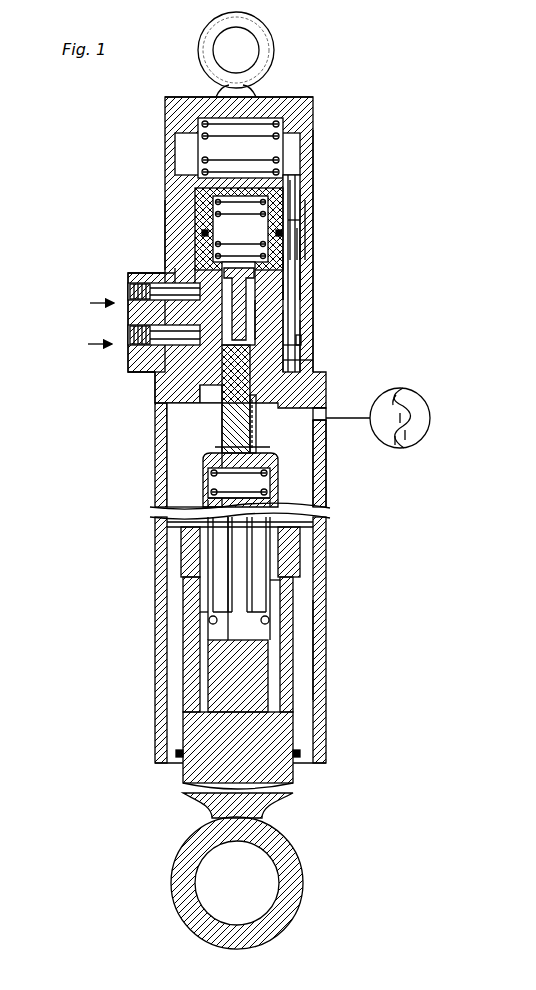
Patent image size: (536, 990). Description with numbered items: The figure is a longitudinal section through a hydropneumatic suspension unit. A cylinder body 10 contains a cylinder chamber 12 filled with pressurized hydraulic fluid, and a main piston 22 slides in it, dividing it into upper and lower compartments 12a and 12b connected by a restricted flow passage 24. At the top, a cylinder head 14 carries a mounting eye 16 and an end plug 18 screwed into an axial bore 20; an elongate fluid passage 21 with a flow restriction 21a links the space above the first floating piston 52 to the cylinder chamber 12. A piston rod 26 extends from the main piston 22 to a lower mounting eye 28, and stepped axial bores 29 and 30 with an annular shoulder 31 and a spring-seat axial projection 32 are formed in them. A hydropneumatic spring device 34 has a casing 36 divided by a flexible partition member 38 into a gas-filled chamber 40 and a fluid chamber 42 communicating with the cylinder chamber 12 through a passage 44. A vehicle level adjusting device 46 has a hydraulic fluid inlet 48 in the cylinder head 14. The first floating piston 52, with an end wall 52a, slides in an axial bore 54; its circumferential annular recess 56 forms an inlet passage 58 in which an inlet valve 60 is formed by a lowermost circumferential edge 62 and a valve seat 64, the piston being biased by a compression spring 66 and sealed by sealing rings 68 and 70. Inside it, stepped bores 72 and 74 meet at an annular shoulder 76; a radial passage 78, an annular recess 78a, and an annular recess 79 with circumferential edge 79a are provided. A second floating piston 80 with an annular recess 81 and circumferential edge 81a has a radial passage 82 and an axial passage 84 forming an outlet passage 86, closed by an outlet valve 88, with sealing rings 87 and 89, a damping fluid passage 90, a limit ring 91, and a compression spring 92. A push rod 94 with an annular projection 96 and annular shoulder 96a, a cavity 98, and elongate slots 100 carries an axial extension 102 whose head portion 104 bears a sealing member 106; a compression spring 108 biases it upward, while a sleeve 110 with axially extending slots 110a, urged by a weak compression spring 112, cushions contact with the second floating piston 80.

The cylinder body 10 is at (153, 447).
The cylinder chamber 12 is at (314, 472).
The upper compartment 12a is at (327, 452).
The lower compartment 12b is at (315, 627).
The cylinder head 14 is at (163, 193).
The mounting eye 16 is at (262, 46).
The end plug 18 is at (268, 99).
The axial bore 20 is at (316, 150).
The elongate fluid passage 21 is at (300, 190).
The flow restriction 21a is at (298, 182).
The main piston 22 is at (160, 554).
The restricted flow passage 24 is at (322, 547).
The piston rod 26 is at (190, 662).
The mounting eye 28 is at (298, 864).
The axial bore 29 is at (325, 531).
The axial bore 30 is at (310, 662).
The annular shoulder 31 is at (300, 579).
The axial projection 32 is at (165, 628).
The hydropneumatic spring device 34 is at (430, 407).
The casing 36 is at (425, 432).
The flexible partition member 38 is at (415, 440).
The chamber 40 is at (418, 421).
The chamber 42 is at (392, 398).
The passage 44 is at (326, 416).
The vehicle level adjusting device 46 is at (128, 308).
The hydraulic fluid inlet 48 is at (128, 347).
The first floating piston 52 is at (180, 212).
The end wall 52a is at (240, 188).
The axial bore 54 is at (313, 203).
The circumferential annular recess 56 is at (128, 370).
The inlet passage 58 is at (210, 392).
The inlet valve 60 is at (208, 385).
The lowermost circumferential edge 62 is at (205, 407).
The valve seat 64 is at (167, 432).
The compression spring 66 is at (176, 149).
The sealing ring 68 is at (320, 215).
The sealing ring 70 is at (318, 336).
The axial bore 72 is at (320, 237).
The axial bore 74 is at (314, 282).
The annular shoulder 76 is at (314, 252).
The radial passage 78 is at (127, 282).
The annular recess 78a is at (165, 272).
The annular recess 79 is at (190, 268).
The circumferential edge 79a is at (198, 270).
The second floating piston 80 is at (304, 328).
The annular recess 81 is at (318, 264).
The circumferential edge 81a is at (318, 291).
The radial passage 82 is at (239, 270).
The axial passage 84 is at (272, 304).
The outlet passage 86 is at (128, 332).
The sealing ring 87 is at (200, 240).
The outlet valve 88 is at (157, 231).
The sealing ring 89 is at (326, 346).
The fluid passage 90 is at (300, 316).
The limit ring 91 is at (155, 381).
The compression spring 92 is at (320, 226).
The push rod 94 is at (203, 470).
The annular projection 96 is at (190, 609).
The annular shoulder 96a is at (190, 592).
The cavity 98 is at (278, 493).
The elongate slot 100 is at (270, 602).
The axial extension 102 is at (245, 447).
The head portion 104 is at (205, 400).
The sealing member 106 is at (313, 352).
The compression spring 108 is at (208, 495).
The sleeve 110 is at (250, 395).
The axially extending slot 110a is at (318, 366).
The compression spring 112 is at (256, 434).